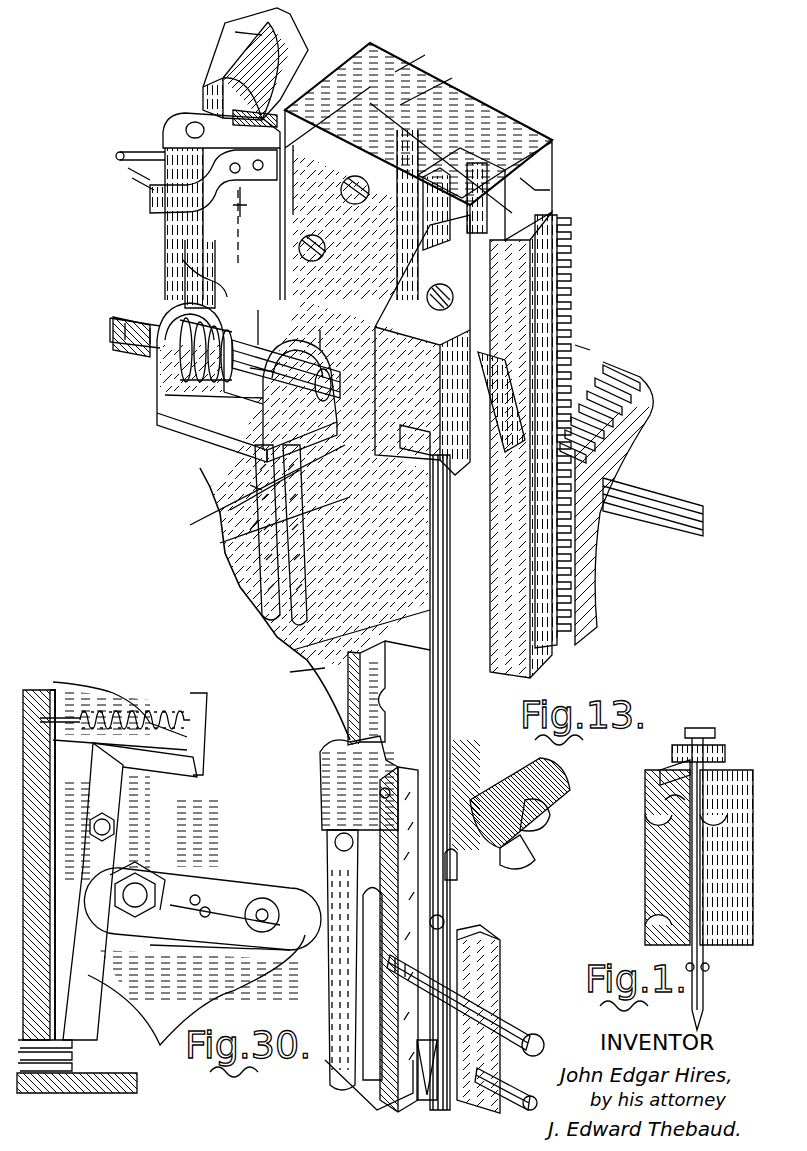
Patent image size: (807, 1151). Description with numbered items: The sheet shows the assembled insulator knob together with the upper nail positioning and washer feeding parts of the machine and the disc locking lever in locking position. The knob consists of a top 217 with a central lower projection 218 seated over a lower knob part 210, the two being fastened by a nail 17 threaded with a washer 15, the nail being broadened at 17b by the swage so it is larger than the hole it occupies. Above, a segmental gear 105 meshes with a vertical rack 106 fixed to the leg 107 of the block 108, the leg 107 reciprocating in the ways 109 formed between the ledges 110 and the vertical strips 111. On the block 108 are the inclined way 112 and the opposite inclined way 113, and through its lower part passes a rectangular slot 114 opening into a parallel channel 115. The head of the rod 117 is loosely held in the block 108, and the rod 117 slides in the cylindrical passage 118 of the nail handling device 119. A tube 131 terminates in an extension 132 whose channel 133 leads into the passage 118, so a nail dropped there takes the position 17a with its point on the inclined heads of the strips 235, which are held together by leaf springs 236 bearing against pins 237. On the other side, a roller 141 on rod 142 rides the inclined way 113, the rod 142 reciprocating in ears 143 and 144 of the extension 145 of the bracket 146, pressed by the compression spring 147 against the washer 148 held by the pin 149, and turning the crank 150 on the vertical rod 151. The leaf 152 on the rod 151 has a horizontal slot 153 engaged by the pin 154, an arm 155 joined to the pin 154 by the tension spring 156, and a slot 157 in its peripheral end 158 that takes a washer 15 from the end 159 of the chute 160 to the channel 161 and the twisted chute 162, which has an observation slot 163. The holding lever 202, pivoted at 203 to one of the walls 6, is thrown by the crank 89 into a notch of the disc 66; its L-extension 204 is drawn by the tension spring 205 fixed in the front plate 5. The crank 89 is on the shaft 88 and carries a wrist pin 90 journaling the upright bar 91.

In FIG. 13, the front plate 5 is at (310, 445).
In FIG. 30, the front plate 5 is at (50, 690).
In FIG. 30, the walls 6 is at (196, 990).
In FIG. 13, the washer 15 is at (360, 62).
In FIG. 1, the washer 15 is at (728, 752).
In FIG. 1, the nail 17 is at (718, 733).
In FIG. 13, the nail position 17a is at (430, 996).
In FIG. 1, the broadened nail portion 17b is at (708, 968).
In FIG. 30, the disc 66 is at (55, 1072).
In FIG. 30, the shaft 88 is at (262, 915).
In FIG. 30, the crank 89 is at (201, 906).
In FIG. 30, the wrist pin 90 is at (160, 895).
In FIG. 30, the upright bar 91 is at (137, 881).
In FIG. 13, the segmental gear 105 is at (618, 470).
In FIG. 13, the vertical rack 106 is at (565, 352).
In FIG. 13, the leg 107 is at (560, 298).
In FIG. 13, the block 108 is at (447, 345).
In FIG. 13, the ways 109 is at (500, 190).
In FIG. 13, the ledges 110 is at (540, 196).
In FIG. 13, the vertical strips 111 is at (452, 182).
In FIG. 13, the inclined way 112 is at (500, 418).
In FIG. 13, the inclined way 113 is at (250, 484).
In FIG. 13, the rectangular slot 114 is at (230, 510).
In FIG. 13, the channel 115 is at (250, 530).
In FIG. 13, the rod 117 is at (290, 672).
In FIG. 13, the cylindrical passage 118 is at (478, 870).
In FIG. 13, the nail handling device 119 is at (322, 752).
In FIG. 13, the tube 131 is at (555, 780).
In FIG. 13, the extension 132 is at (550, 822).
In FIG. 13, the channel 133 is at (538, 858).
In FIG. 13, the roller 141 is at (335, 320).
In FIG. 13, the rod 142 is at (267, 315).
In FIG. 13, the ear 143 is at (160, 428).
In FIG. 13, the ear 144 is at (150, 386).
In FIG. 13, the extension 145 is at (262, 456).
In FIG. 13, the bracket 146 is at (190, 236).
In FIG. 13, the compression spring 147 is at (150, 364).
In FIG. 13, the washer 148 is at (260, 385).
In FIG. 13, the pin 149 is at (231, 228).
In FIG. 13, the crank 150 is at (125, 321).
In FIG. 13, the vertical rod 151 is at (190, 124).
In FIG. 13, the leaf 152 is at (178, 128).
In FIG. 13, the horizontal slot 153 is at (158, 152).
In FIG. 13, the pin 154 is at (116, 156).
In FIG. 13, the arm 155 is at (150, 205).
In FIG. 13, the tension spring 156 is at (128, 175).
In FIG. 13, the slot 157 is at (428, 59).
In FIG. 13, the peripheral end 158 is at (445, 85).
In FIG. 13, the end 159 is at (232, 75).
In FIG. 13, the chute 160 is at (235, 32).
In FIG. 13, the channel 161 is at (240, 212).
In FIG. 13, the chute 162 is at (266, 572).
In FIG. 13, the slot 163 is at (290, 588).
In FIG. 30, the holding lever 202 is at (160, 1060).
In FIG. 30, the pivot 203 is at (110, 827).
In FIG. 30, the L-extension 204 is at (197, 770).
In FIG. 30, the tension spring 205 is at (158, 712).
In FIG. 1, the knob part 210 is at (650, 872).
In FIG. 1, the top 217 is at (668, 770).
In FIG. 1, the projection 218 is at (668, 800).
In FIG. 13, the strips 235 is at (480, 1000).
In FIG. 13, the leaf springs 236 is at (330, 980).
In FIG. 13, the pins 237 is at (515, 1088).